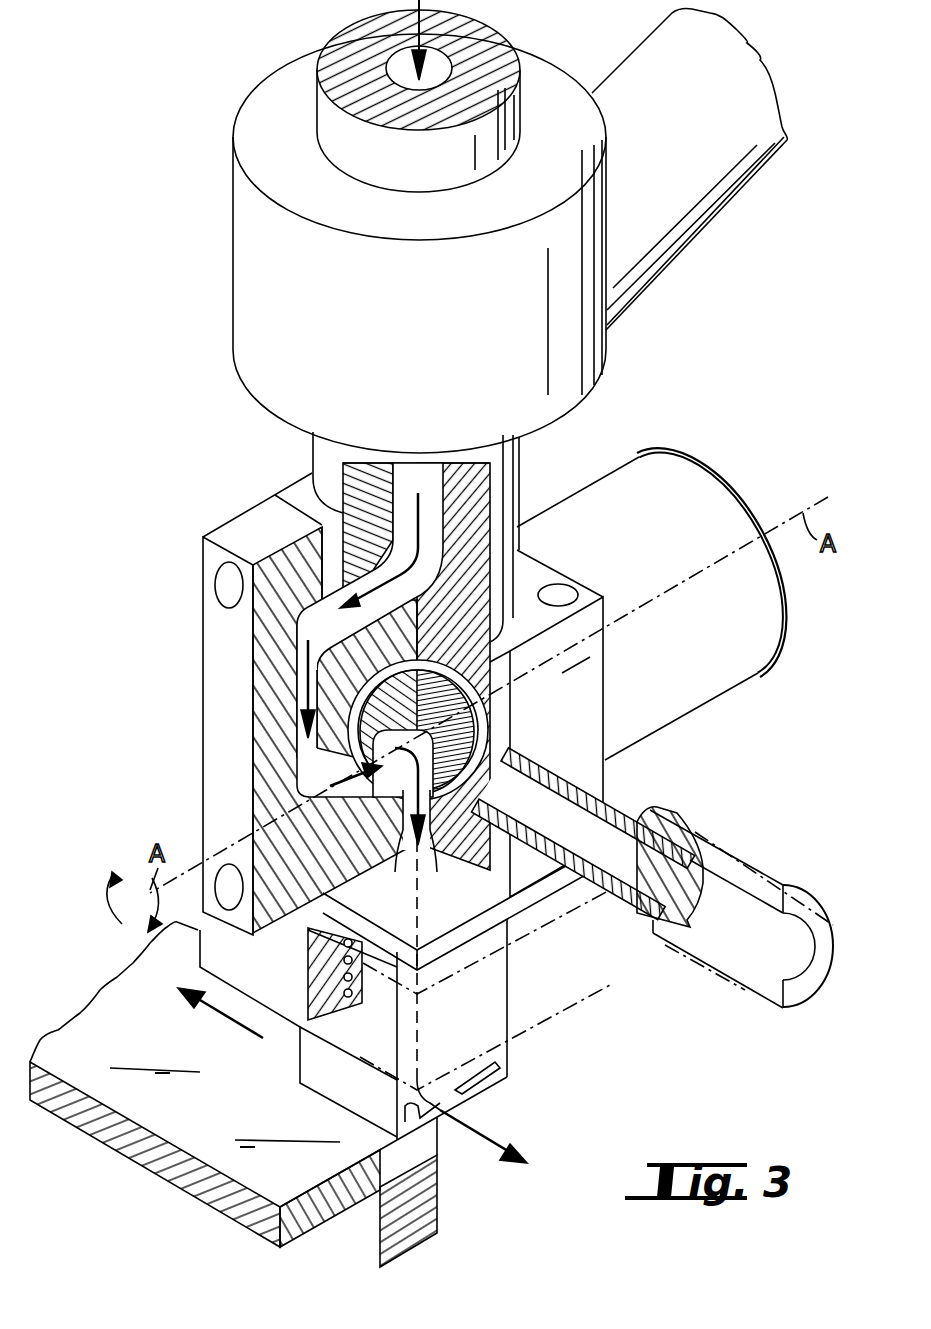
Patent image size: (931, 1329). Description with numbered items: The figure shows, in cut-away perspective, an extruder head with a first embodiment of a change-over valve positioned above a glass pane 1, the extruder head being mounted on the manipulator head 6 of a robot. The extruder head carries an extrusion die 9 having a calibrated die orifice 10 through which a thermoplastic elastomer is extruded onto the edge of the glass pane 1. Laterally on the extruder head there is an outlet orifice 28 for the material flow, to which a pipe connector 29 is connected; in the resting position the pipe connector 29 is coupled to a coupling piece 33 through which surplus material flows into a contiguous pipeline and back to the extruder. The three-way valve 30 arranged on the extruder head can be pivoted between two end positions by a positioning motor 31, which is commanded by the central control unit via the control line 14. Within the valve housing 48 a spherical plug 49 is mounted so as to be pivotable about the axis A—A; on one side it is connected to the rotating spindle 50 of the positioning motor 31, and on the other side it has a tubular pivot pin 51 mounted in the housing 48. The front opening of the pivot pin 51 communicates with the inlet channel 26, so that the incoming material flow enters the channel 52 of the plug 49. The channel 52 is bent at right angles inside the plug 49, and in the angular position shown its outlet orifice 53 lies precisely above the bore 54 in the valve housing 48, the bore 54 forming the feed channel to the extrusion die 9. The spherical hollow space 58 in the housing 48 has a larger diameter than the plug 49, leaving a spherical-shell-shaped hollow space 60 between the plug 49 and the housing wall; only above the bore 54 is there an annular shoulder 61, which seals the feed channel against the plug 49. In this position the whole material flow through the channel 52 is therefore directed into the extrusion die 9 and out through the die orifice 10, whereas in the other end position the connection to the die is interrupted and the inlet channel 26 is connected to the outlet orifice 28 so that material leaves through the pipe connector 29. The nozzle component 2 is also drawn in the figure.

The glass pane 1 is at (103, 1140).
The nozzle 2 is at (425, 1205).
The manipulator head 6 is at (233, 262).
The extrusion die 9 is at (498, 1075).
The calibrated die orifice 10 is at (482, 1078).
The control line 14 is at (730, 466).
The inlet channel 26 is at (297, 688).
The outlet orifice 28 is at (603, 802).
The pipe connector 29 is at (657, 845).
The three-way valve 30 is at (190, 663).
The positioning motor 31 is at (783, 632).
The coupling piece 33 is at (757, 997).
The valve housing 48 is at (523, 850).
The spherical plug 49 is at (480, 727).
The rotating spindle 50 is at (568, 677).
The tubular pivot pin 51 is at (330, 783).
The channel 52 is at (392, 868).
The outlet orifice 53 is at (483, 768).
The bore 54 is at (438, 868).
The spherical hollow space 58 is at (487, 617).
The spherical-shell-shaped hollow space 60 is at (377, 713).
The annular shoulder 61 is at (410, 862).